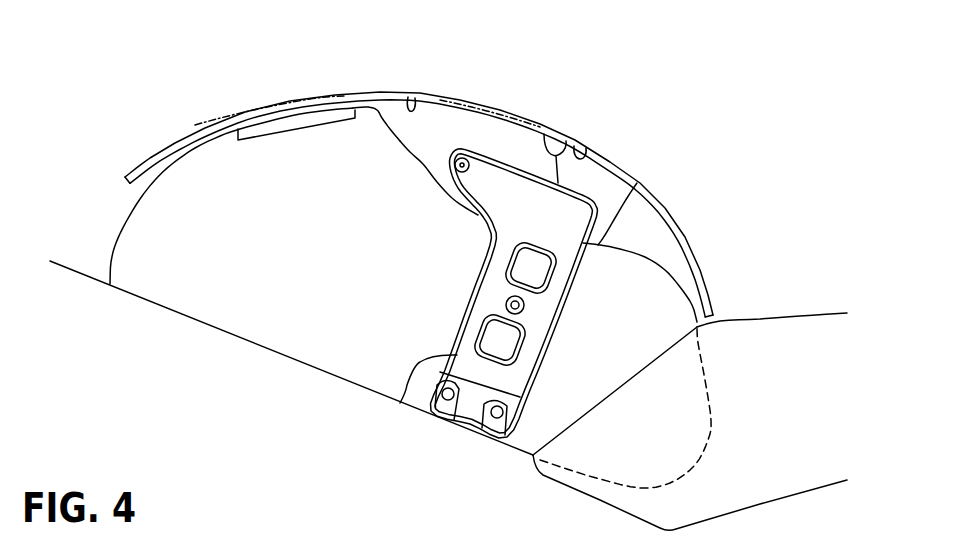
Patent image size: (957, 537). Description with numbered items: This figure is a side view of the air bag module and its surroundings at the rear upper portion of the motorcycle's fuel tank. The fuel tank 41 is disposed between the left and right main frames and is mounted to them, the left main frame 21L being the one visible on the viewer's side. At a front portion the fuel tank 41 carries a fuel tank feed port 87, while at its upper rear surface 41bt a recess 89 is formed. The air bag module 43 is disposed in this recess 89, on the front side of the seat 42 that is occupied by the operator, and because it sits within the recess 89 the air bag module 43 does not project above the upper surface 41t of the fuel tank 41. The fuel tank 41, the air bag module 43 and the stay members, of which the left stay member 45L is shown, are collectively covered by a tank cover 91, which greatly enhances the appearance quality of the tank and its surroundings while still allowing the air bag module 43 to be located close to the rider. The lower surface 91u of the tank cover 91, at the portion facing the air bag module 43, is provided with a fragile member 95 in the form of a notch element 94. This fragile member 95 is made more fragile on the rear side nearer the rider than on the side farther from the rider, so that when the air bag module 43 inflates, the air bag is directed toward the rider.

The main frame 21L is at (292, 372).
The fuel tank 41 is at (383, 119).
The upper surface of the fuel tank 41t is at (367, 113).
The upper rear surface of the fuel tank 41bt is at (617, 247).
The seat 42 is at (795, 350).
The air bag module 43 is at (498, 140).
The stay member 45L is at (400, 403).
The fuel tank feed port 87 is at (303, 123).
The recess 89 is at (637, 183).
The tank cover 91 is at (608, 152).
The lower surface of the tank cover 91u is at (590, 138).
The notch element 94 is at (410, 96).
The fragile member 95 is at (548, 133).